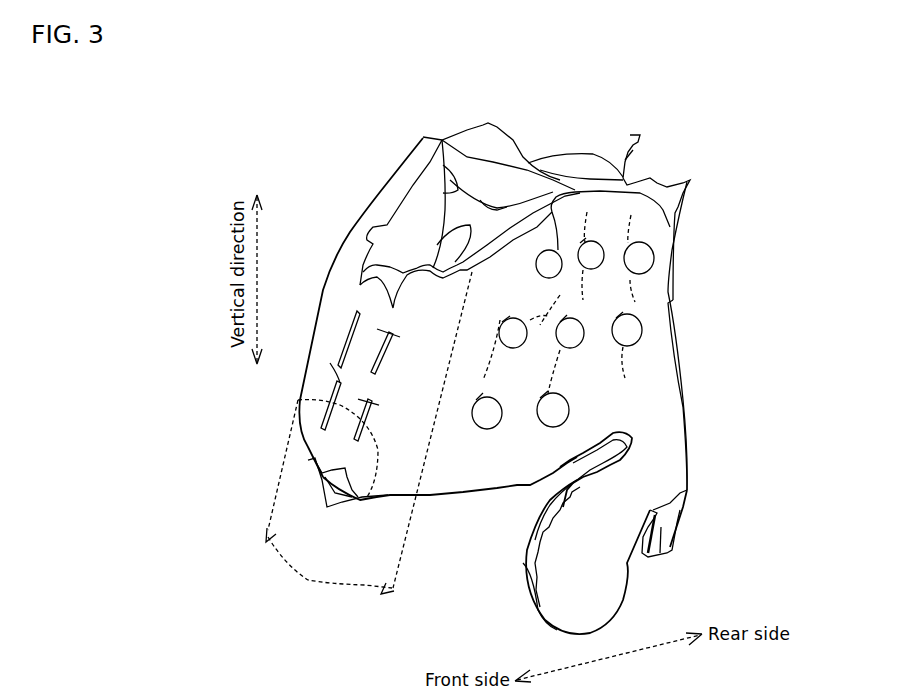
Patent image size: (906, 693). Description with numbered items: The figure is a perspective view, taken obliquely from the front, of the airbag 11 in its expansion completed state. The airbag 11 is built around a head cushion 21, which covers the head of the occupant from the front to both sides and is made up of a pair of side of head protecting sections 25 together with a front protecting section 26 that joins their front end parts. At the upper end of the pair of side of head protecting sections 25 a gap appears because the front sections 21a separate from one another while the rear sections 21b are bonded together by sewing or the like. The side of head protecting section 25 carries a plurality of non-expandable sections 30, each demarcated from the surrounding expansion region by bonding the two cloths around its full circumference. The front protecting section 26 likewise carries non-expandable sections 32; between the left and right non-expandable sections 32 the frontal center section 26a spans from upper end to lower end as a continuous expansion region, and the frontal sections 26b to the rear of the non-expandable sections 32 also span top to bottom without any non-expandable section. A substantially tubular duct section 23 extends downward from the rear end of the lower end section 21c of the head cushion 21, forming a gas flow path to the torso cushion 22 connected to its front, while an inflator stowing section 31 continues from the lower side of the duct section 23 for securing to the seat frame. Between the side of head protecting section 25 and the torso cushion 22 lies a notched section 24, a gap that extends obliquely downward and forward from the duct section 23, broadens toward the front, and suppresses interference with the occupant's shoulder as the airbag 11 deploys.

The airbag 11 is at (547, 83).
The head cushion 21 is at (350, 242).
The front sections 21a is at (453, 150).
The rear sections 21b is at (597, 173).
The lower end section 21c is at (620, 480).
The torso cushion 22 is at (590, 580).
The duct section 23 is at (653, 427).
The notched section 24 is at (633, 443).
The side of head protecting section 25 is at (507, 460).
The front protecting section 26 is at (342, 587).
The frontal center section 26a is at (332, 403).
The frontal sections 26b is at (317, 350).
The non-expandable sections 30 is at (643, 253).
The inflator stowing section 31 is at (663, 527).
The non-expandable sections 32 is at (365, 500).